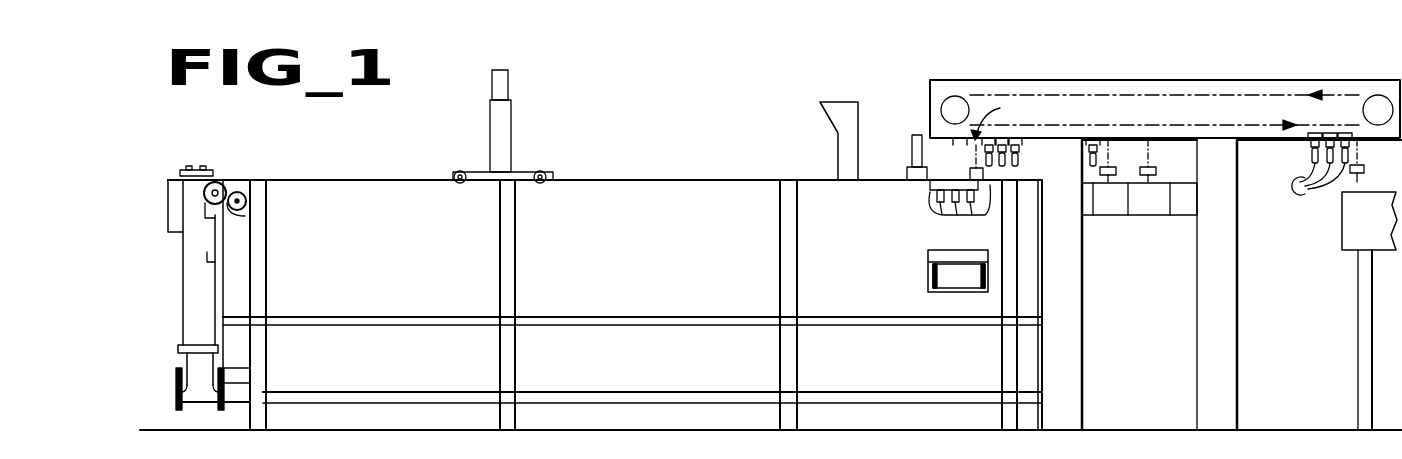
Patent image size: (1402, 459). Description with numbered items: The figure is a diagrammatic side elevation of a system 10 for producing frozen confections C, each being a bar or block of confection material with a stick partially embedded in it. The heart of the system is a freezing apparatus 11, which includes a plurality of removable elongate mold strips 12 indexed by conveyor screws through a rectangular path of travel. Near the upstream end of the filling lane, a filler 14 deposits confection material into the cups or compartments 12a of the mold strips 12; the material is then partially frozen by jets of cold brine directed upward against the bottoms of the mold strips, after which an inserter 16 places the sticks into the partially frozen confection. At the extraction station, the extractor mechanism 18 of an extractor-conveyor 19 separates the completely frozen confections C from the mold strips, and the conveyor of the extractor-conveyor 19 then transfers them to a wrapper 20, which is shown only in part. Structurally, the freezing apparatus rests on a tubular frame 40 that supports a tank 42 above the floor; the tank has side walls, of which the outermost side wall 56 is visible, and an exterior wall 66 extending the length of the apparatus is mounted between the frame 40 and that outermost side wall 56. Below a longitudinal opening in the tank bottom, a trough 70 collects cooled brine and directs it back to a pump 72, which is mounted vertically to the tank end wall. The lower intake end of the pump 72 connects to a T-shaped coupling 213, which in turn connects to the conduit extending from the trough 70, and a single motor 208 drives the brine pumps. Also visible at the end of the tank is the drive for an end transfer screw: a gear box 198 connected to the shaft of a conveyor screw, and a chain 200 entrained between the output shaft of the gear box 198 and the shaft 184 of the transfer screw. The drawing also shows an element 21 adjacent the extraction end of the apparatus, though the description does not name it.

The system 10 is at (388, 138).
The freezing apparatus 11 is at (365, 174).
The tank 42 is at (600, 266).
The side wall 56 is at (596, 390).
The trough 70 is at (300, 397).
The exterior wall 66 is at (662, 183).
The motor 208 is at (172, 222).
The pump 72 is at (185, 273).
The T-shaped coupling 213 is at (192, 390).
The gear box 198 is at (228, 190).
The shaft 184 is at (240, 201).
The chain 200 is at (245, 216).
The inserter 16 is at (514, 124).
The filler 14 is at (838, 150).
The post 21 is at (910, 146).
The extractor mechanism 18 is at (970, 173).
The mold strip 12 is at (940, 192).
The compartments 12a is at (962, 208).
The tubular frame 40 is at (1014, 362).
The extractor-conveyor 19 is at (1170, 77).
The frozen confections C is at (1090, 155).
The wrapper 20 is at (1342, 240).